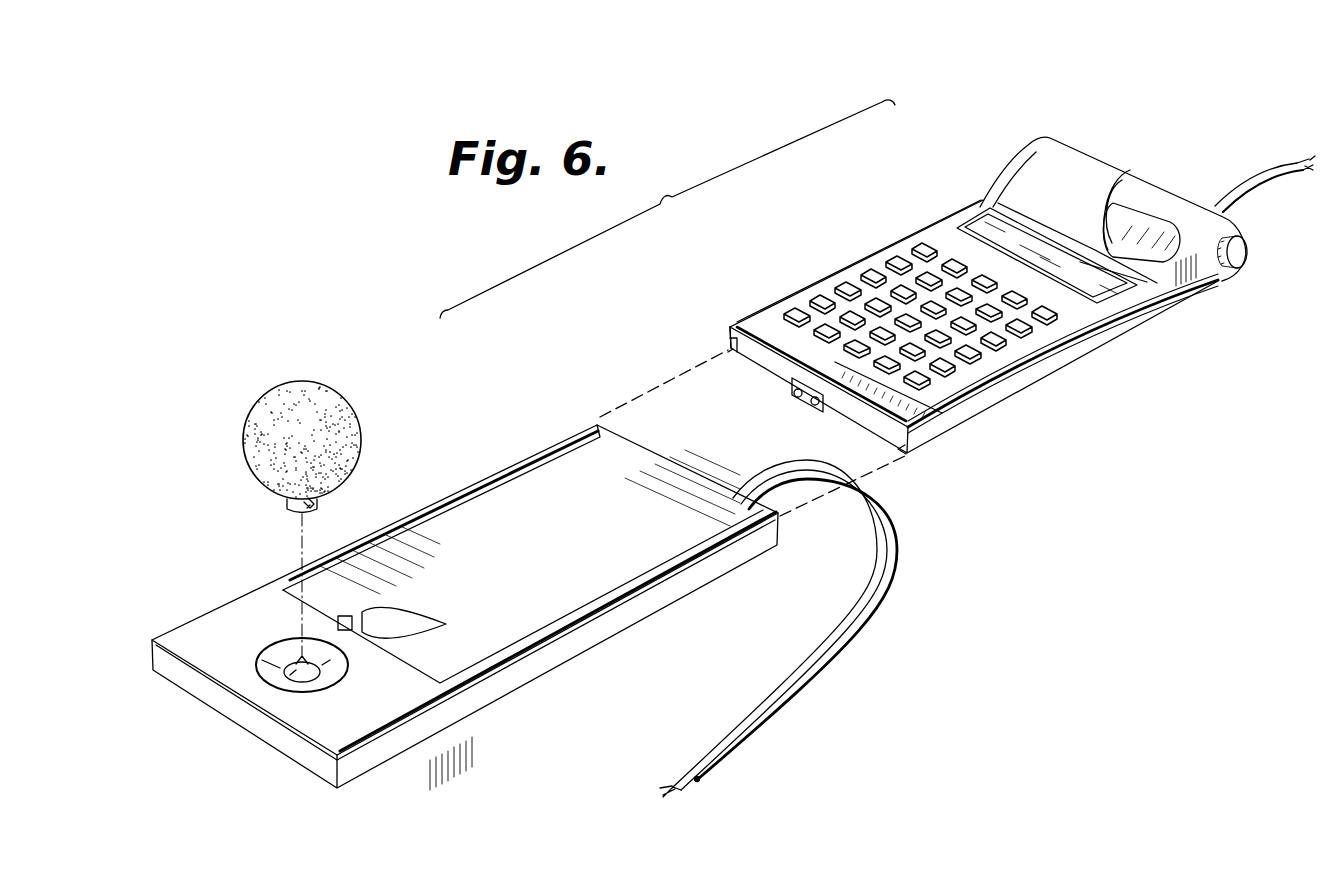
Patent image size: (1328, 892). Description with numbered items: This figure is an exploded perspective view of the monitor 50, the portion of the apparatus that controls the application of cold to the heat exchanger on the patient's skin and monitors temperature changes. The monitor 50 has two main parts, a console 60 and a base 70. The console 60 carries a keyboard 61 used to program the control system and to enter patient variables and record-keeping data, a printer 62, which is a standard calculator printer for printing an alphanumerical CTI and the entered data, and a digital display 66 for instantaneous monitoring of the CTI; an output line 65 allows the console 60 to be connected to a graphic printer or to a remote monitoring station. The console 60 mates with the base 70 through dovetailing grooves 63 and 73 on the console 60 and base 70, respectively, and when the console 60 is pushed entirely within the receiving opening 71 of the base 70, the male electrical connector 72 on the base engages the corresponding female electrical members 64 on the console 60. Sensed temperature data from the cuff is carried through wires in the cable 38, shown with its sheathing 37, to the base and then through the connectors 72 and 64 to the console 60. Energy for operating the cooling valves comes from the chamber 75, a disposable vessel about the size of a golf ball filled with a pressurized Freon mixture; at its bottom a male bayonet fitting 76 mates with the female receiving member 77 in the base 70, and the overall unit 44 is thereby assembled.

The cable 37 is at (766, 722).
The cable 38 is at (719, 742).
The calculator unit 44 is at (768, 306).
The monitor 50 is at (657, 353).
The console 60 is at (978, 173).
The keyboard 61 is at (983, 352).
The printer 62 is at (1078, 186).
The dovetailing groove 63 is at (722, 338).
The female electrical members 64 is at (796, 399).
The output line 65 is at (1283, 188).
The digital display 66 is at (1109, 282).
The base 70 is at (570, 683).
The receiving opening 71 is at (523, 566).
The male electrical connector 72 is at (446, 624).
The dovetailing groove 73 is at (478, 492).
The chamber 75 is at (262, 412).
The male bayonet fitting 76 is at (292, 517).
The female receiving member 77 is at (294, 672).